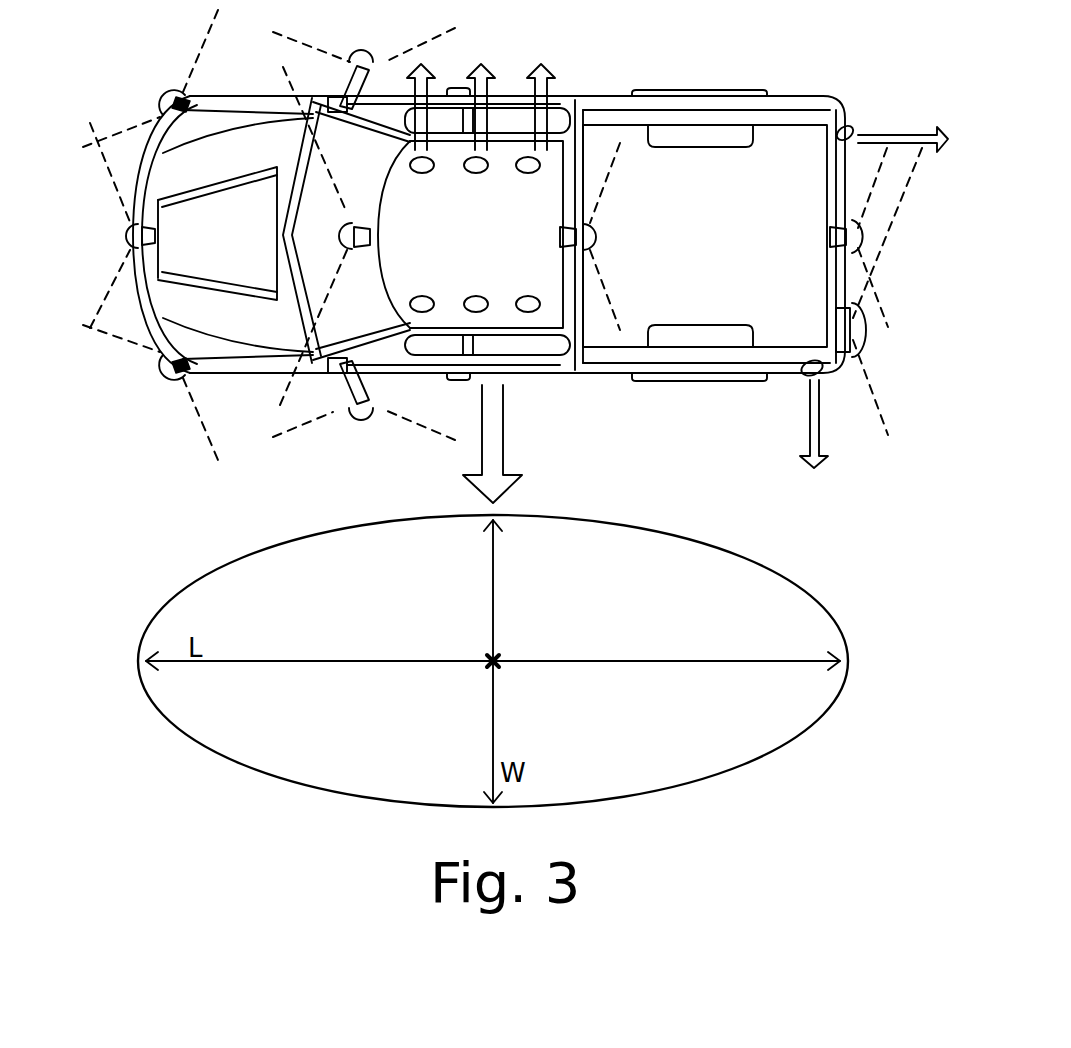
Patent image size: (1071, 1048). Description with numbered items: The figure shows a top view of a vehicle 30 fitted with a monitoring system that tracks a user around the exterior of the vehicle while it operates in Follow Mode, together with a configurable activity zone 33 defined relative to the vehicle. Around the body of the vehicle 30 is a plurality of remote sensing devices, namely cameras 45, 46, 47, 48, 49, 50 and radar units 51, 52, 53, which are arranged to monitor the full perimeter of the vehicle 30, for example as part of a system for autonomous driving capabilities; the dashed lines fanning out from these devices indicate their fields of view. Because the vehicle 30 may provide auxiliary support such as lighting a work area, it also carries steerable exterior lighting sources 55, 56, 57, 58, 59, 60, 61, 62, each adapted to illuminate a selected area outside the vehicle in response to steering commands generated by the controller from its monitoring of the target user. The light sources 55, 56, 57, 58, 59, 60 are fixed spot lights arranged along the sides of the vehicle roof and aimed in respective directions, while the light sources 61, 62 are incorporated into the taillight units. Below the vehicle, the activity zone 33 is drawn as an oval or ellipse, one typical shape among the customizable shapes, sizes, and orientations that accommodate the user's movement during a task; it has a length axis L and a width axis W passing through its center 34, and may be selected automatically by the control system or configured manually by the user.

The vehicle 30 is at (789, 99).
The activity zone 33 is at (250, 773).
The center 34 is at (490, 658).
The camera 45 is at (153, 233).
The camera 46 is at (360, 226).
The camera 47 is at (830, 240).
The camera 48 is at (347, 393).
The camera 49 is at (347, 77).
The camera 50 is at (562, 237).
The radar unit 51 is at (181, 345).
The radar unit 52 is at (193, 130).
The radar unit 53 is at (838, 327).
The steerable exterior lighting source 55 is at (419, 297).
The steerable exterior lighting source 56 is at (476, 297).
The steerable exterior lighting source 57 is at (531, 297).
The steerable exterior lighting source 58 is at (418, 171).
The steerable exterior lighting source 59 is at (473, 168).
The steerable exterior lighting source 60 is at (526, 169).
The steerable exterior lighting source 61 is at (847, 131).
The steerable exterior lighting source 62 is at (805, 373).